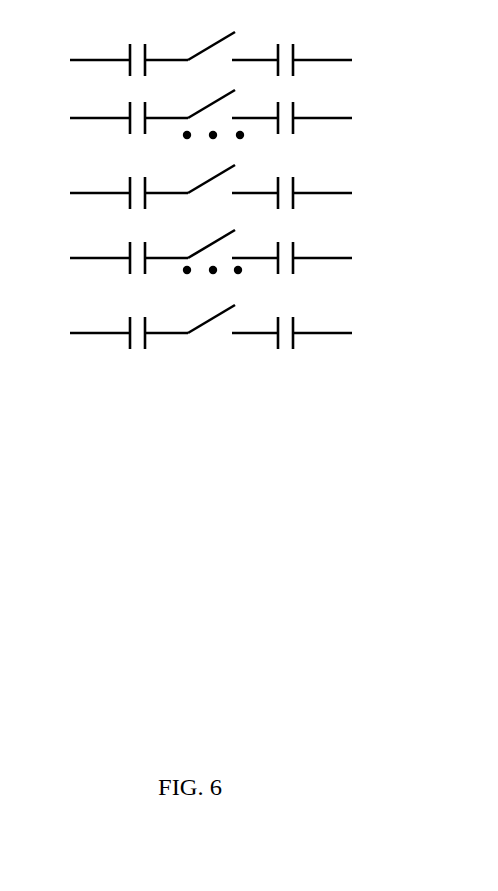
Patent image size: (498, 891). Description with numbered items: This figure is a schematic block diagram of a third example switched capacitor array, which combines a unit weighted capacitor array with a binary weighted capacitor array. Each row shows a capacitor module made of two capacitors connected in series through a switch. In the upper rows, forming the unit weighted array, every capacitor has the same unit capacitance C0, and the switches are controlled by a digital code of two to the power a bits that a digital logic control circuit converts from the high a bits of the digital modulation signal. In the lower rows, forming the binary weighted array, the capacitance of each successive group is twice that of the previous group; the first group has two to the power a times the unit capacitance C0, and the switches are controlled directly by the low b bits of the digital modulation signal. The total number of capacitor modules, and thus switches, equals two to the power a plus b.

The unit capacitor C0 is at (211, 116).